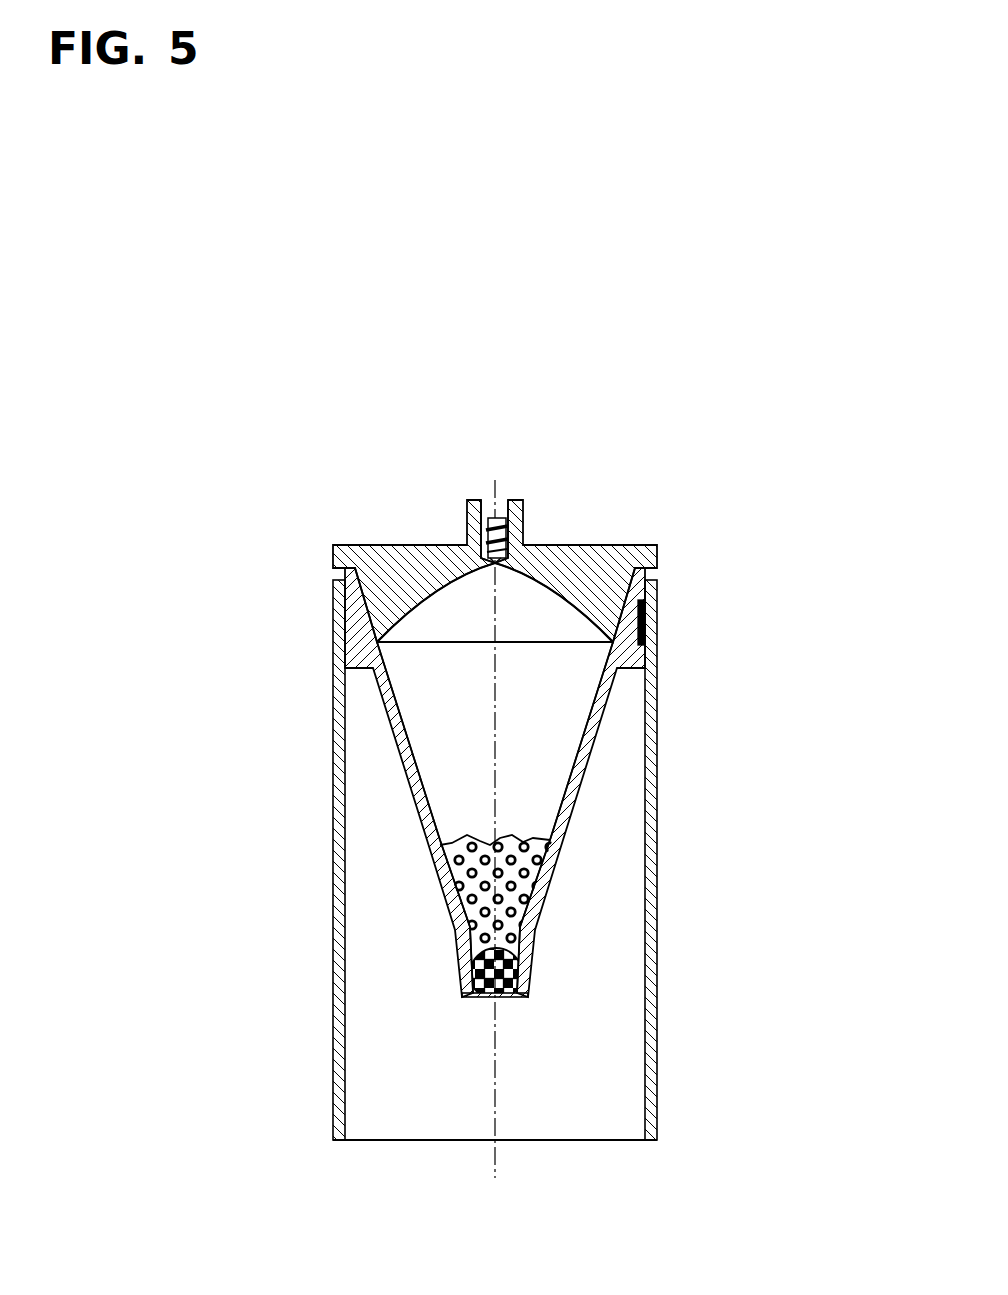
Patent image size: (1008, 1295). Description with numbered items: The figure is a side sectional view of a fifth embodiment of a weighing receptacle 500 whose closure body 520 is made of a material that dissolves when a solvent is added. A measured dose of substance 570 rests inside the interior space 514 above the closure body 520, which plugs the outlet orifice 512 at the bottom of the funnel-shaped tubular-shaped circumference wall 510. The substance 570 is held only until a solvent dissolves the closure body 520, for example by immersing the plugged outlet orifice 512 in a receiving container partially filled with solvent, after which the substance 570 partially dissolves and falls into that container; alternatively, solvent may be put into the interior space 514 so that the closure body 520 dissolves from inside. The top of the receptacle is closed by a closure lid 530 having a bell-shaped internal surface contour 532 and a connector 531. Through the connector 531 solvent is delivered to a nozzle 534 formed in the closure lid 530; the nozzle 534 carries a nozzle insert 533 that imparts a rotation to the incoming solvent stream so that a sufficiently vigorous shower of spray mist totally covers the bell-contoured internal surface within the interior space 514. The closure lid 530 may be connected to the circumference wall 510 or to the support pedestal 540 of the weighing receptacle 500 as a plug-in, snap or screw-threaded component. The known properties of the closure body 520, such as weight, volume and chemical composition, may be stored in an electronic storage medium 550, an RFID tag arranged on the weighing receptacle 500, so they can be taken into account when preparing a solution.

The weighing receptacle 500 is at (611, 441).
The tubular-shaped circumference wall 510 is at (408, 777).
The outlet orifice 512 is at (361, 1067).
The interior space 514 is at (535, 746).
The closure body 520 is at (518, 967).
The closure lid 530 is at (390, 562).
The connector 531 is at (483, 483).
The bell-shaped internal surface contour 532 is at (599, 651).
The nozzle insert 533 is at (502, 533).
The nozzle 534 is at (599, 630).
The support pedestal 540 is at (337, 939).
The electronic storage medium 550 is at (647, 623).
The substance 570 is at (630, 888).